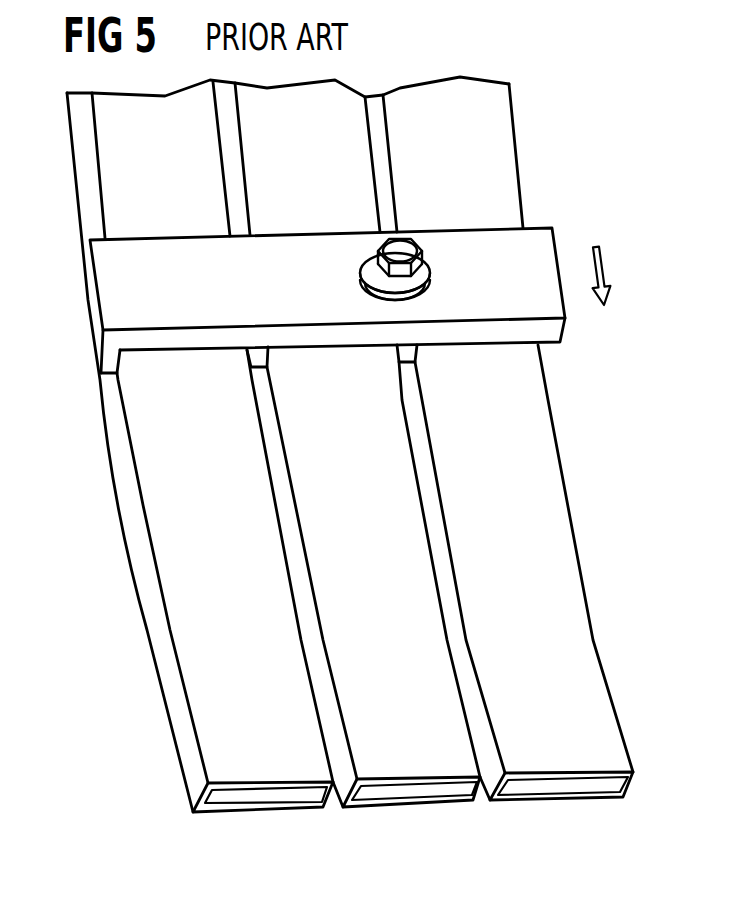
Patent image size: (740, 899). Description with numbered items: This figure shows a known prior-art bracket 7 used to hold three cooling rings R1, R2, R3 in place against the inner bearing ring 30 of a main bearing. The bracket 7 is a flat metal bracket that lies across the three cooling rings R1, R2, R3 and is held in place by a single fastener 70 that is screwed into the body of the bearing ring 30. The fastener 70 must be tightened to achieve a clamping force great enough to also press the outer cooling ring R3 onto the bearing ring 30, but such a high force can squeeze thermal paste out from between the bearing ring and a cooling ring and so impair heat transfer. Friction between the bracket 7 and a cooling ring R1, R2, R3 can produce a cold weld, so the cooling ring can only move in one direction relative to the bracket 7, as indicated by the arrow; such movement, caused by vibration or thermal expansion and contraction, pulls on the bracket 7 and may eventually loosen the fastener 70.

The bracket 7 is at (190, 257).
The fastener 70 is at (376, 276).
The inner bearing ring 30 is at (346, 478).
The cooling ring R1 is at (565, 788).
The cooling ring R2 is at (415, 793).
The outer cooling ring R3 is at (268, 795).